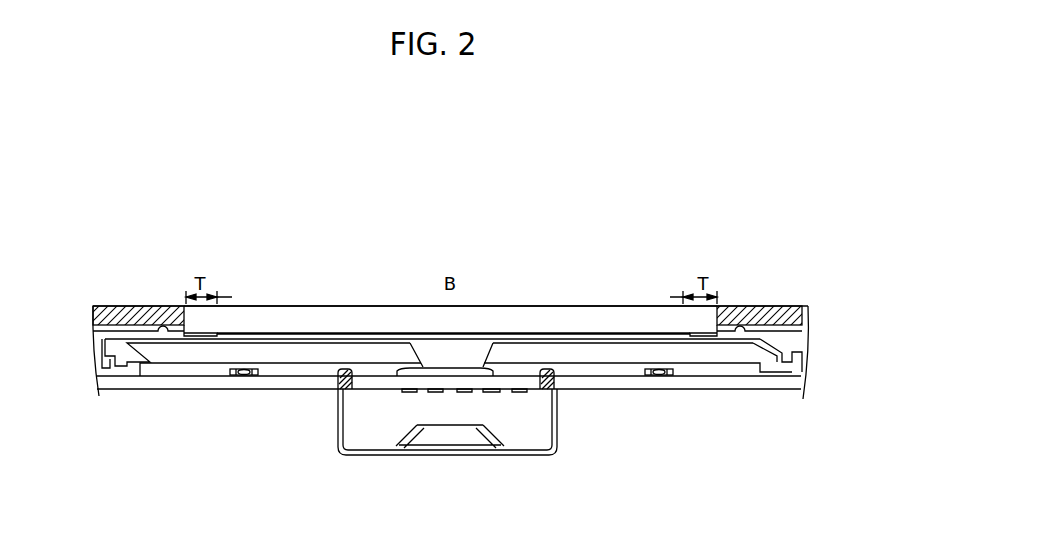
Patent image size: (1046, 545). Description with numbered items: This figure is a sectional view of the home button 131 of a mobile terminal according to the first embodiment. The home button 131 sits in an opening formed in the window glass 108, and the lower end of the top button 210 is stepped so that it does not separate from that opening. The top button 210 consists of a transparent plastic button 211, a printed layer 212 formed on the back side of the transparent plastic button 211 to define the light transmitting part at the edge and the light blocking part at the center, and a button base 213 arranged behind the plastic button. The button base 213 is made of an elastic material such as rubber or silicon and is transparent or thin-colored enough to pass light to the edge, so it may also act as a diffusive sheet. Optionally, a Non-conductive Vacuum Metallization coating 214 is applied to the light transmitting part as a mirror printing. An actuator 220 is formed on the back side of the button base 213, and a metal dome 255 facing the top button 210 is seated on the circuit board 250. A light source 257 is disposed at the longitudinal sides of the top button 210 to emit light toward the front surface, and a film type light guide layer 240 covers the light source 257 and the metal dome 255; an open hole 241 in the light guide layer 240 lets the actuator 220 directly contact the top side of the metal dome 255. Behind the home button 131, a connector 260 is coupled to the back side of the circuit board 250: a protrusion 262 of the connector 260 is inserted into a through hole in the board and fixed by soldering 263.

The home button 131 is at (588, 238).
The window glass 108 is at (781, 312).
The top button 210 is at (447, 260).
The transparent plastic button 211 is at (304, 312).
The printed layer 212 is at (362, 333).
The button base 213 is at (403, 340).
The coating 214 is at (428, 223).
The actuator 220 is at (448, 362).
The open hole 241 is at (485, 345).
The light guide layer 240 is at (395, 371).
The circuit board 250 is at (772, 380).
The metal dome 255 is at (448, 371).
The light source 257 is at (653, 376).
The connector 260 is at (536, 430).
The protrusion 262 is at (338, 392).
The soldering 263 is at (336, 378).